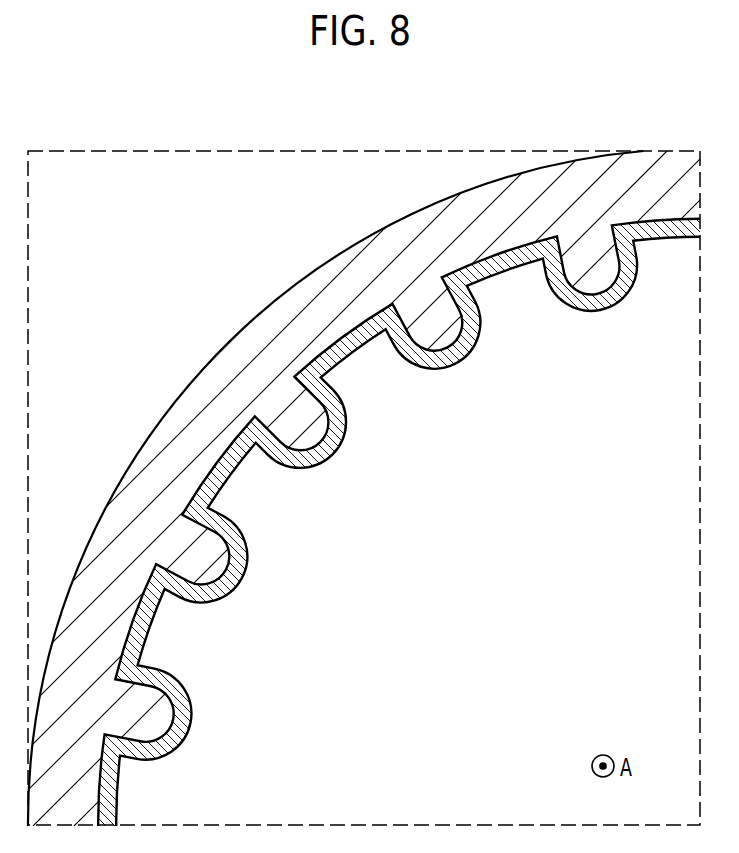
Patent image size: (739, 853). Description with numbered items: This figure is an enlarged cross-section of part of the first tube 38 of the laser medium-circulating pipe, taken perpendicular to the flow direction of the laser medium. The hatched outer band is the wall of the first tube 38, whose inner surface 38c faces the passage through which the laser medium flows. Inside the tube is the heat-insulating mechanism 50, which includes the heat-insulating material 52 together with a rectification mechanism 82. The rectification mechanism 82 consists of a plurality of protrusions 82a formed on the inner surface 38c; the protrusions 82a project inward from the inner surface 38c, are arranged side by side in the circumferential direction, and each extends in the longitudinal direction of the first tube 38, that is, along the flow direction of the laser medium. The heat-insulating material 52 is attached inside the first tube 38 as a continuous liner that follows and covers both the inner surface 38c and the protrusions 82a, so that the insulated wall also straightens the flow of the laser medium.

The first tube 38 is at (242, 353).
The inner surface 38c is at (380, 336).
The heat-insulating material 52 is at (227, 590).
The rectification mechanism 82 is at (457, 433).
The protrusion 82a is at (308, 432).
The heat-insulating mechanism 50 is at (206, 723).